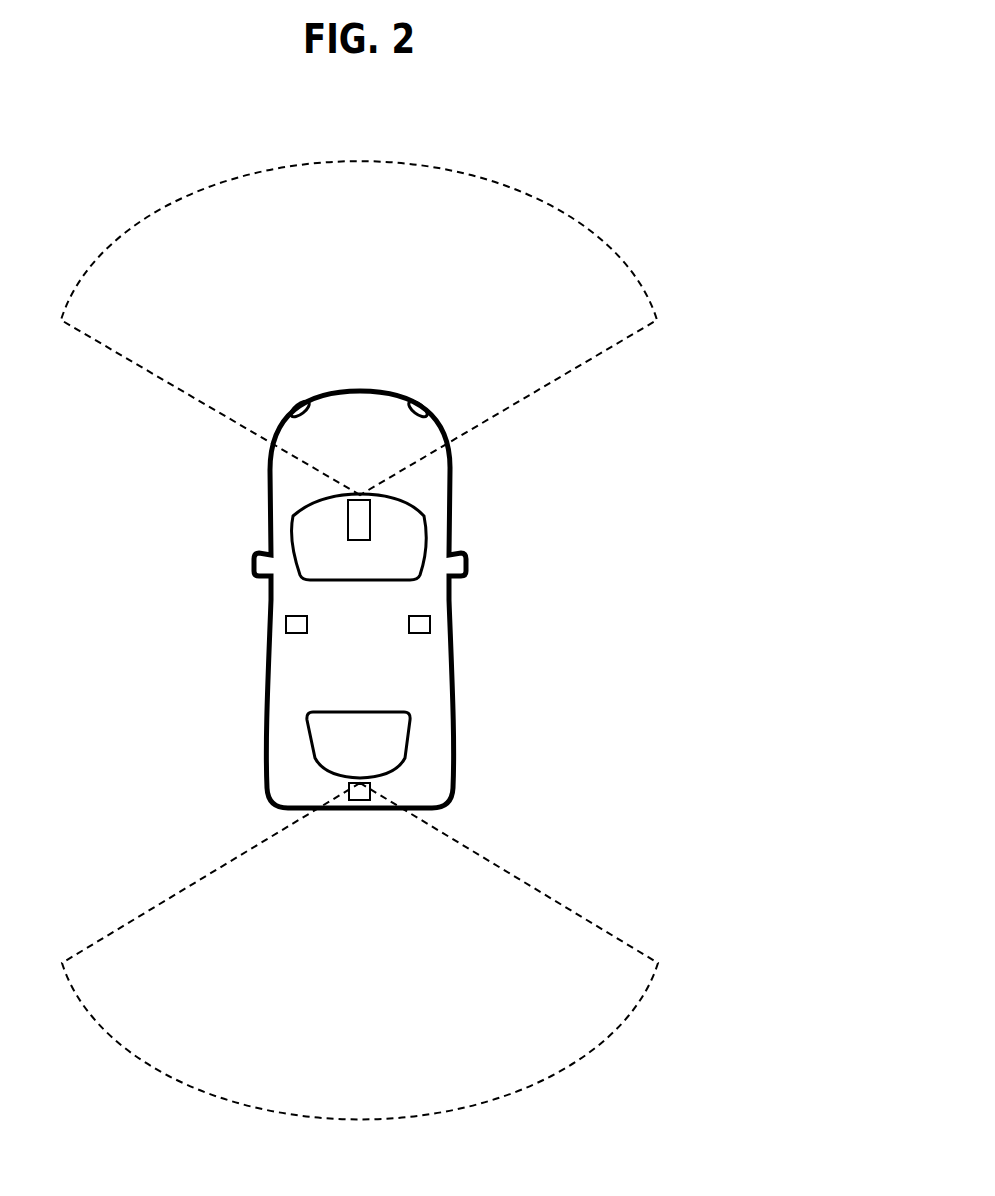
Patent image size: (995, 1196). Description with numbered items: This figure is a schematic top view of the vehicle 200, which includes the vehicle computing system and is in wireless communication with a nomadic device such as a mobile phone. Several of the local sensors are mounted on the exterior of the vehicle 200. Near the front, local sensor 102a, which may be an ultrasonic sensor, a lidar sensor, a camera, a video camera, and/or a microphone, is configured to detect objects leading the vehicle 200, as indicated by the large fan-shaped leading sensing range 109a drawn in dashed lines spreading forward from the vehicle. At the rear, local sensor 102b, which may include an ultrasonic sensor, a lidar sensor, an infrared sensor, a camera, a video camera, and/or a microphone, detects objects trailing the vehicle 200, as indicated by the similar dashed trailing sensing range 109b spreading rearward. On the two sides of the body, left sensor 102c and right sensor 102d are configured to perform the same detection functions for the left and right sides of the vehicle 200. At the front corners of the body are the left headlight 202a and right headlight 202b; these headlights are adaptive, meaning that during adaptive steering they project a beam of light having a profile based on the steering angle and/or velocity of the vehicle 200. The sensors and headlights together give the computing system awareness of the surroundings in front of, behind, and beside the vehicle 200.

The vehicle 200 is at (698, 155).
The left headlight 202a is at (297, 405).
The right headlight 202b is at (418, 405).
The local sensor 102a is at (360, 523).
The local sensor 102b is at (360, 800).
The left sensor 102c is at (295, 623).
The right sensor 102d is at (422, 623).
The leading sensing range 109a is at (635, 335).
The trailing sensing range 109b is at (633, 950).